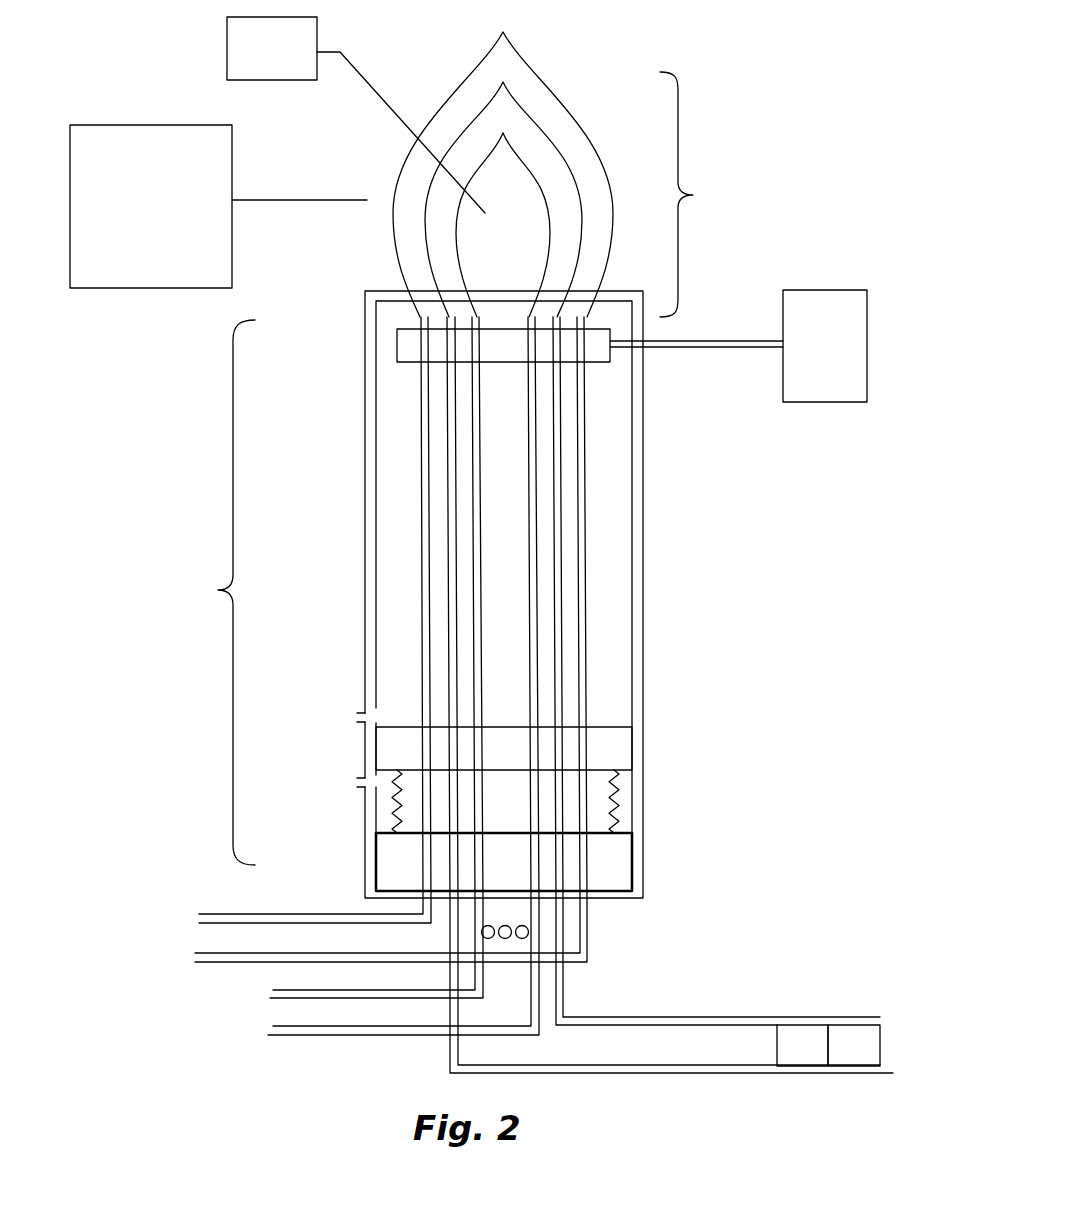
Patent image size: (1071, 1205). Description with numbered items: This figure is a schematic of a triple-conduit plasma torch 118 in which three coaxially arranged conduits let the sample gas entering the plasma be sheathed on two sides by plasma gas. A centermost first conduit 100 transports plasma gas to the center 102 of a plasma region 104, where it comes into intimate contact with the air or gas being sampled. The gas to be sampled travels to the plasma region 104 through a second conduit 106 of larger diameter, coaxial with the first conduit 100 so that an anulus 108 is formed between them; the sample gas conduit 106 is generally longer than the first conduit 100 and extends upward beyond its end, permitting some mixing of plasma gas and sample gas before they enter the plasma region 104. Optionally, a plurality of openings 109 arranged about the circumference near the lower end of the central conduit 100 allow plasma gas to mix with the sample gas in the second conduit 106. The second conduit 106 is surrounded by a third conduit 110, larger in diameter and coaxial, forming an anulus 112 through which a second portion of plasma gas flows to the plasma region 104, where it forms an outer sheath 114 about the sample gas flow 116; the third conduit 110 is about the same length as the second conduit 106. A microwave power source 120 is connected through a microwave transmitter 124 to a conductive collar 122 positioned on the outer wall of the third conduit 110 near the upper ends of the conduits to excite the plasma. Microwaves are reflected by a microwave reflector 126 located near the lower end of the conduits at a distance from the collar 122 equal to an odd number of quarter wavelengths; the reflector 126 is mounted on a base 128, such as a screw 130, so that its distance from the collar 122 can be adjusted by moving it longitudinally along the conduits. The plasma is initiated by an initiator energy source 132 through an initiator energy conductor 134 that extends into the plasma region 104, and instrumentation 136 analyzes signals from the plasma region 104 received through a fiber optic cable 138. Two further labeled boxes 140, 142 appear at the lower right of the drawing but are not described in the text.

The centermost first conduit 100 is at (475, 497).
The center of plasma region 102 is at (520, 252).
The plasma region 104 is at (701, 194).
The second conduit 106 is at (450, 453).
The anulus 108 is at (543, 597).
The openings 109 is at (520, 943).
The third conduit 110 is at (423, 595).
The anulus 112 is at (570, 512).
The outer sheath 114 is at (490, 114).
The sample gas flow 116 is at (499, 157).
The triple-conduit plasma torch 118 is at (211, 592).
The microwave power source 120 is at (836, 357).
The conductive collar 122 is at (398, 340).
The microwave transmitter 124 is at (750, 338).
The microwave reflector 126 is at (623, 748).
The base 128 is at (645, 877).
The screw 130 is at (618, 810).
The initiator energy source 132 is at (291, 60).
The initiator energy conductor 134 is at (370, 85).
The instrumentation 136 is at (169, 202).
The fiber optic cable 138 is at (315, 200).
The reference junction 140 is at (873, 1060).
The compensation unit 142 is at (821, 1060).